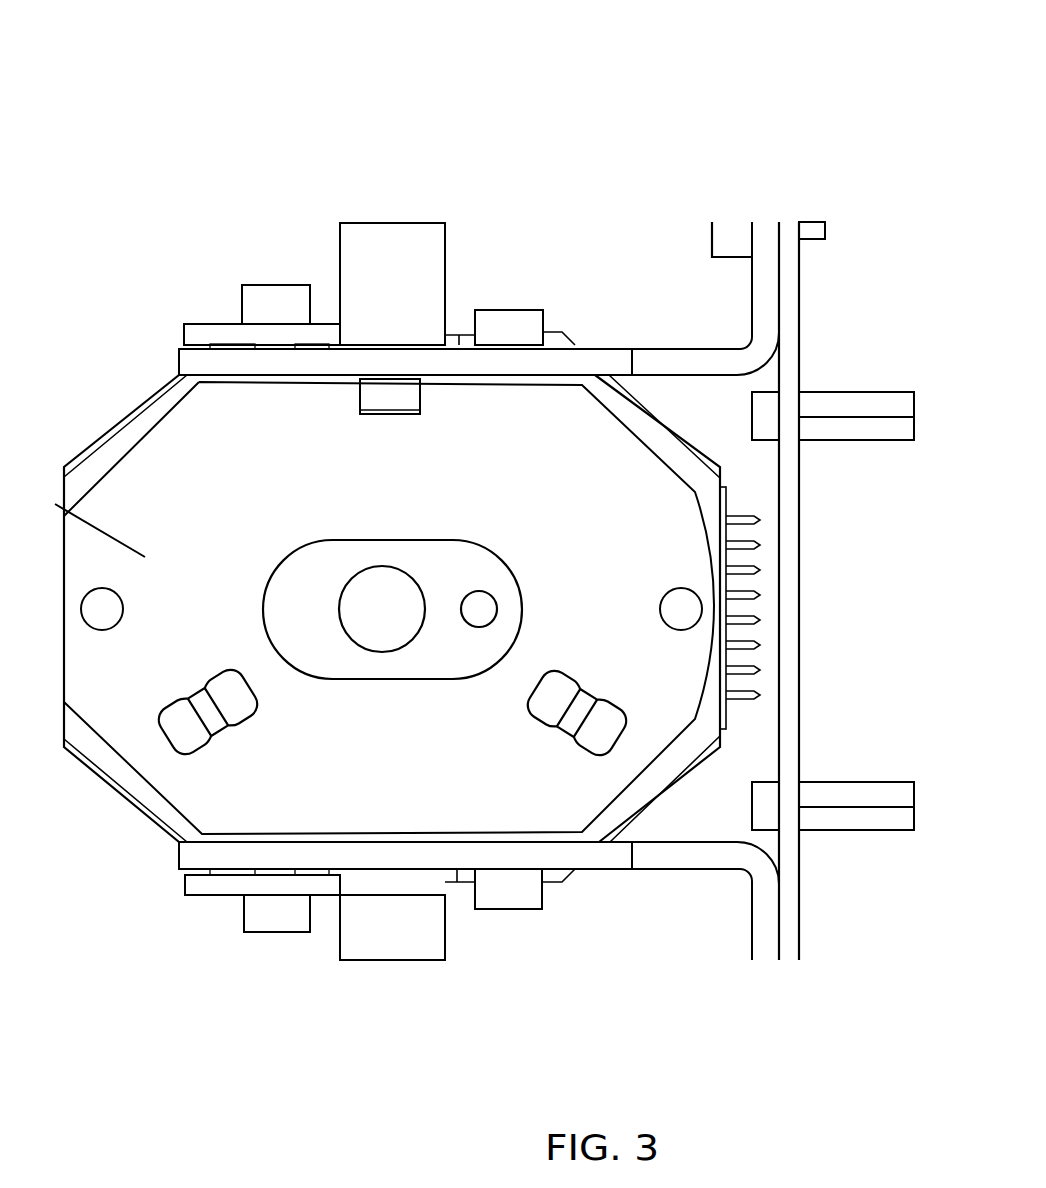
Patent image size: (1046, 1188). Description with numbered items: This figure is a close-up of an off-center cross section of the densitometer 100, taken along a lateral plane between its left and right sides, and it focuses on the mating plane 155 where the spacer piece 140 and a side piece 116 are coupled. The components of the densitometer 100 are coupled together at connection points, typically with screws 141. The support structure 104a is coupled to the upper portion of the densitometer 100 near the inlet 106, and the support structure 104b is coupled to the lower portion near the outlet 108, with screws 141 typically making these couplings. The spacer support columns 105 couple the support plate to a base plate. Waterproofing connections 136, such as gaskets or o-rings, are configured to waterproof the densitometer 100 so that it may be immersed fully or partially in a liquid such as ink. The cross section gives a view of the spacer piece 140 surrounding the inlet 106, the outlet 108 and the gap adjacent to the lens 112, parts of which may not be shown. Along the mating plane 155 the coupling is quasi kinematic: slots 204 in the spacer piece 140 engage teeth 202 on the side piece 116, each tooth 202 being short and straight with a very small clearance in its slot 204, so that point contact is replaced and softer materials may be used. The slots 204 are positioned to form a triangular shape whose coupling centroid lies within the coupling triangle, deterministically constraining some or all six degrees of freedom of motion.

The densitometer 100 is at (208, 81).
The support structure 104a is at (177, 357).
The support structure 104b is at (593, 857).
The spacer support column 105 is at (868, 390).
The inlet 106 is at (398, 221).
The outlet 108 is at (385, 958).
The lens 112 is at (352, 592).
The side piece 116 is at (148, 440).
The waterproofing connection 136 is at (478, 592).
The spacer piece 140 is at (457, 723).
The screw 141 is at (270, 283).
The mating plane 155 is at (79, 524).
The tooth 202 is at (583, 705).
The slot 204 is at (560, 670).